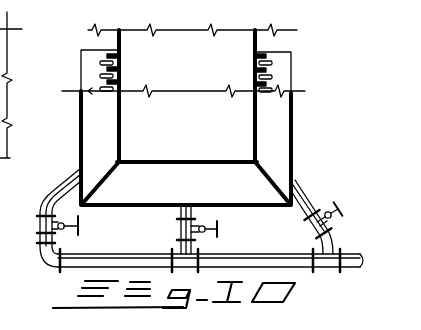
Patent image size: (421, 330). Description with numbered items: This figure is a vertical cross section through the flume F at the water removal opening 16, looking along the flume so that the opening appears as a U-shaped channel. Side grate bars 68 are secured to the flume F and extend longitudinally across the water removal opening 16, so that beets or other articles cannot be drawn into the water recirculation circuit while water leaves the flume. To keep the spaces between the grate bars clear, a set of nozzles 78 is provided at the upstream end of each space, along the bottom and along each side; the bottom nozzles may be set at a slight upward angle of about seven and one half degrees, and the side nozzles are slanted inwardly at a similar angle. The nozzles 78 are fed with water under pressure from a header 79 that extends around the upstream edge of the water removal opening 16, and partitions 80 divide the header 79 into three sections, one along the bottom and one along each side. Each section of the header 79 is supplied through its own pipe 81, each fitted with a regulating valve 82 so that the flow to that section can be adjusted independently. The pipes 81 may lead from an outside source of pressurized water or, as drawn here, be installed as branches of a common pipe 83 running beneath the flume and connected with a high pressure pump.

The water removal opening 16 is at (120, 61).
The side grate bars 68 is at (120, 82).
The nozzles 78 is at (100, 75).
The header 79 is at (87, 82).
The partitions 80 is at (106, 175).
The pipe 81 is at (58, 182).
The regulating valve 82 is at (40, 228).
The pipe 83 is at (85, 262).
The flume F is at (258, 43).